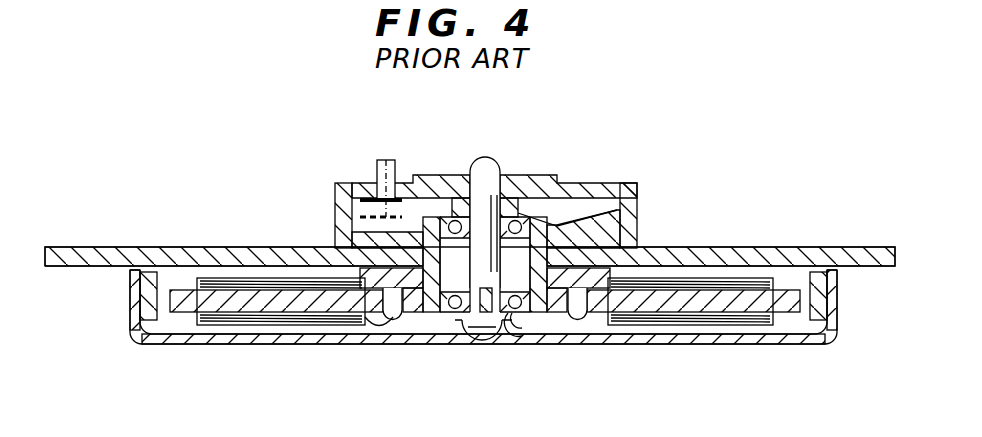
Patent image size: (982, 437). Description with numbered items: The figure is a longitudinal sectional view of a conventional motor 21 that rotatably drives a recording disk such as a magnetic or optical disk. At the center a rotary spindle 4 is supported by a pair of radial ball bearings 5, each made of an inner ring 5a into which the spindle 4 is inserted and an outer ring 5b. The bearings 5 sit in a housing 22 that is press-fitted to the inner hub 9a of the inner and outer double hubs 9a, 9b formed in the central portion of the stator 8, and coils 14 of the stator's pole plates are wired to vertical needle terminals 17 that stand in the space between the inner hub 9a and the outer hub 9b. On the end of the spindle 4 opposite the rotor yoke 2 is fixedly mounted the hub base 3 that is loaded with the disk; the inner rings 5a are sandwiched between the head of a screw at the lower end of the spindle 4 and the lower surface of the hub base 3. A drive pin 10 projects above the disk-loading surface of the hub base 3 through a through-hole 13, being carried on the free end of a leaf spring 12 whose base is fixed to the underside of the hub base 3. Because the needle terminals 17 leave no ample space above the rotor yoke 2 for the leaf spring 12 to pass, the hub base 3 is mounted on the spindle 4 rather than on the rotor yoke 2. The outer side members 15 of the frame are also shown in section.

The rotor yoke 2 is at (483, 339).
The hub base 3 is at (547, 178).
The spindle 4 is at (488, 160).
The radial ball bearing 5 is at (522, 322).
The inner ring 5a is at (467, 192).
The outer ring 5b is at (600, 212).
The stator 8 is at (703, 270).
The inner hub 9a is at (412, 307).
The outer hub 9b is at (367, 319).
The drive pin 10 is at (383, 160).
The leaf spring 12 is at (348, 222).
The through-hole 13 is at (377, 182).
The coil 14 is at (235, 278).
The side block 15 is at (818, 310).
The vertical needle terminal 17 is at (390, 320).
The motor 21 is at (705, 345).
The housing 22 is at (428, 305).